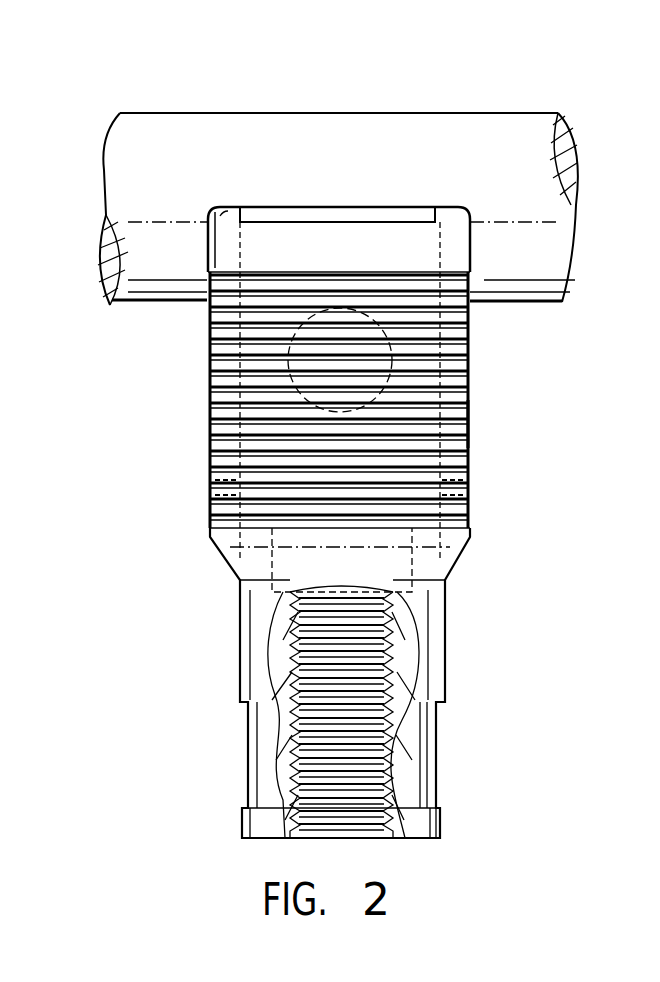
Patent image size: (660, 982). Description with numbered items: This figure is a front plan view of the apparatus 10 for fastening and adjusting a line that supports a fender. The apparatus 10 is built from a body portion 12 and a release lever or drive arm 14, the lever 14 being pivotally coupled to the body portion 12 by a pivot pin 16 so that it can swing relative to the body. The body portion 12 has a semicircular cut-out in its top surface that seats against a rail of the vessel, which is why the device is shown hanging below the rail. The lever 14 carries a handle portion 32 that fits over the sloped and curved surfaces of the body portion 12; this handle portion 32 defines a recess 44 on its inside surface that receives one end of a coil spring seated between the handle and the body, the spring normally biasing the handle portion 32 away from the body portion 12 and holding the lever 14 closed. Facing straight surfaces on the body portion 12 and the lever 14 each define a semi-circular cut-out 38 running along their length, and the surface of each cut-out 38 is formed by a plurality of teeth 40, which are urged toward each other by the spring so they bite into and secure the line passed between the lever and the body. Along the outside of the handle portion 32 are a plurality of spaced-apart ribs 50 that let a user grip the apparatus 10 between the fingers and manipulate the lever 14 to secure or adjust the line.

The apparatus 10 is at (486, 148).
The body portion 12 is at (394, 207).
The release lever or drive arm 14 is at (484, 281).
The pivot pin 16 is at (210, 468).
The handle portion 32 is at (210, 355).
The semi-circular cut-out 38 is at (370, 731).
The teeth 40 is at (388, 782).
The recess 44 is at (385, 355).
The ribs 50 is at (470, 442).